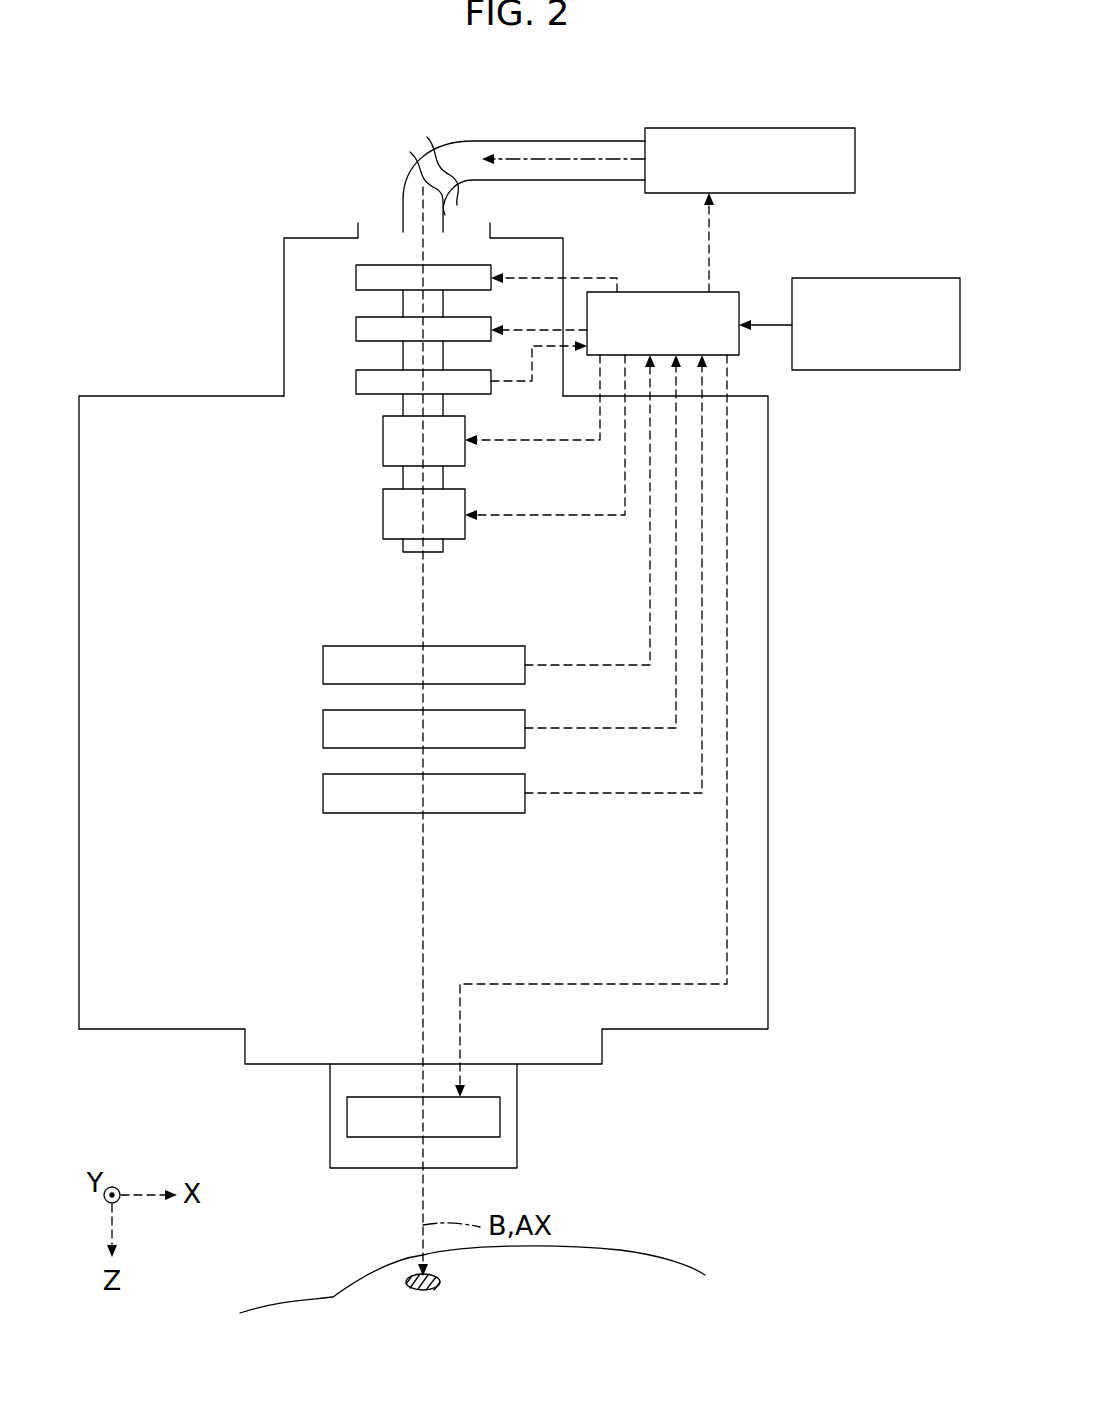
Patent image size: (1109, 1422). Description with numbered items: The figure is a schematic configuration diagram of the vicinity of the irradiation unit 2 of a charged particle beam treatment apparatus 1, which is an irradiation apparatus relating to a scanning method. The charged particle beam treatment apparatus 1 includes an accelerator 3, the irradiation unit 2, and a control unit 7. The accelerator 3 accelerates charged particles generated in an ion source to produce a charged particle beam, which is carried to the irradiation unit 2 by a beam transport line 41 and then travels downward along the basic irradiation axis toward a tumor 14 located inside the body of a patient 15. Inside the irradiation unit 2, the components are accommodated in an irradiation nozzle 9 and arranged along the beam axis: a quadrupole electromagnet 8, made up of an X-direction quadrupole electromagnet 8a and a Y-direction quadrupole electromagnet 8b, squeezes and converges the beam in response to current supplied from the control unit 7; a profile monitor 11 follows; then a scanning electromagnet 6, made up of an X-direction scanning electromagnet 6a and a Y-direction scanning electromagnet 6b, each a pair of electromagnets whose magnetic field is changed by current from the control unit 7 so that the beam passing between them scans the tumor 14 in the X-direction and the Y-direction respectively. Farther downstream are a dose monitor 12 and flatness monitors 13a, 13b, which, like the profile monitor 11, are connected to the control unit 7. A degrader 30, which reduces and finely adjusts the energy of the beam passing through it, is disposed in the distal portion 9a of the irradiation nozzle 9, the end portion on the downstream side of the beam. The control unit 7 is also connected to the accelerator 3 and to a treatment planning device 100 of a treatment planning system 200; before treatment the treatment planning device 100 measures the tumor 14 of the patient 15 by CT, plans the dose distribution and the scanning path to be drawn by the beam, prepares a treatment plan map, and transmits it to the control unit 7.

The charged particle beam treatment apparatus 1 is at (279, 116).
The irradiation unit 2 is at (183, 243).
The accelerator 3 is at (805, 128).
The scanning electromagnet 6 is at (318, 428).
The X-direction scanning electromagnet 6a is at (383, 441).
The Y-direction scanning electromagnet 6b is at (383, 513).
The control unit 7 is at (718, 292).
The quadrupole electromagnet 8 is at (238, 262).
The X-direction quadrupole electromagnet 8a is at (356, 277).
The Y-direction quadrupole electromagnet 8b is at (356, 329).
The irradiation nozzle 9 is at (768, 640).
The distal portion 9a is at (257, 1047).
The profile monitor 11 is at (356, 380).
The dose monitor 12 is at (323, 663).
The flatness monitor 13a is at (323, 727).
The flatness monitor 13b is at (323, 792).
The tumor 14 is at (441, 1282).
The patient 15 is at (278, 1293).
The degrader 30 is at (500, 1115).
The beam transport line 41 is at (403, 186).
The treatment planning device 100 is at (925, 278).
The treatment planning system 200 is at (900, 213).